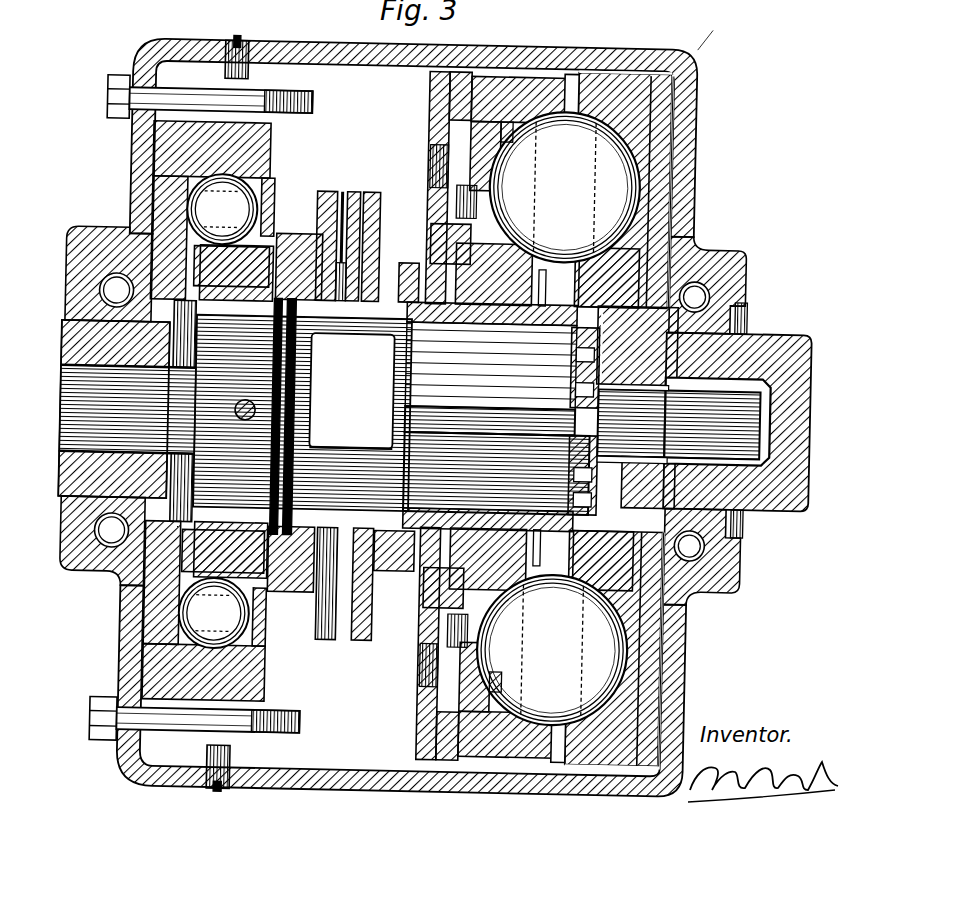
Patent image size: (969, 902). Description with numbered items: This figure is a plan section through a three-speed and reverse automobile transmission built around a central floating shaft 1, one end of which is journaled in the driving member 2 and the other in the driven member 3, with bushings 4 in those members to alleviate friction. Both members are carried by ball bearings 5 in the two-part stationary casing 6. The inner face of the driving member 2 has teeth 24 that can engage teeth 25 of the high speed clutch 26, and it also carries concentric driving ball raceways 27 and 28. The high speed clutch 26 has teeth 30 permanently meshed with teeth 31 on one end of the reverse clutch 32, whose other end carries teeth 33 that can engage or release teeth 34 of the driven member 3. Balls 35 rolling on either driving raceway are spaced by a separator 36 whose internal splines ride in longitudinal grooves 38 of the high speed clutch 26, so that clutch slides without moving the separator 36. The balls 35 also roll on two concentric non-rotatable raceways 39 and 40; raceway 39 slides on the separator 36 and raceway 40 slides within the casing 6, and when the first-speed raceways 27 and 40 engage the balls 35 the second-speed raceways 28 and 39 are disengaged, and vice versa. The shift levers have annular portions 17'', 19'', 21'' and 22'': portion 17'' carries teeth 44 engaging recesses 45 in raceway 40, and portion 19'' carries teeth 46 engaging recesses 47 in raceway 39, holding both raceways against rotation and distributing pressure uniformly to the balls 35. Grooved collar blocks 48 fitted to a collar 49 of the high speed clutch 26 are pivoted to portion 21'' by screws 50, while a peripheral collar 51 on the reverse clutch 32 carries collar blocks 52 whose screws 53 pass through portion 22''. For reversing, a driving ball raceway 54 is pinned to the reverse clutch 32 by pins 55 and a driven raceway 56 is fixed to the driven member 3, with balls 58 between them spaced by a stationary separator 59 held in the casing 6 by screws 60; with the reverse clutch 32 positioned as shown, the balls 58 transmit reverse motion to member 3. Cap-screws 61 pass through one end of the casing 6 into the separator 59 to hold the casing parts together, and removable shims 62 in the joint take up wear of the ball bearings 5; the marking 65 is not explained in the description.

The central floating shaft 1 is at (768, 518).
The driving member 2 is at (780, 340).
The driven member 3 is at (124, 676).
The bushing 4 is at (790, 386).
The ball bearing 5 is at (110, 240).
The casing 6 is at (150, 62).
The annular portion of first-speed shift lever 17'' is at (407, 414).
The annular portion of second-speed shift lever 19'' is at (478, 483).
The annular portion of high speed shift lever 21'' is at (513, 492).
The annular portion of reverse shift lever 22'' is at (451, 502).
The teeth 24 is at (680, 470).
The teeth 25 is at (678, 424).
The high speed clutch 26 is at (496, 473).
The driving ball raceway 27 is at (697, 558).
The driving ball raceway 28 is at (680, 92).
The teeth 30 is at (351, 391).
The teeth 31 is at (350, 437).
The reverse clutch 32 is at (268, 436).
The teeth 33 is at (190, 340).
The teeth 34 is at (192, 366).
The balls 35 is at (668, 162).
The separator 36 is at (552, 330).
The longitudinal grooves 38 is at (504, 407).
The non-rotatable raceway 39 is at (540, 254).
The non-rotatable raceway 40 is at (590, 72).
The teeth 44 is at (470, 66).
The recesses 45 is at (445, 118).
The teeth 46 is at (450, 200).
The recesses 47 is at (427, 244).
The grooved collar blocks 48 is at (388, 300).
The collar 49 is at (452, 600).
The screws 50 is at (440, 636).
The peripheral collar 51 is at (295, 236).
The collar blocks 52 is at (300, 300).
The screws 53 is at (340, 194).
The driving ball raceway 54 is at (105, 585).
The pins 55 is at (236, 410).
The driven raceway 56 is at (180, 162).
The balls 58 is at (170, 672).
The stationary separator 59 is at (282, 66).
The screws 60 is at (232, 42).
The cap-screws 61 is at (101, 102).
The shims 62 is at (214, 782).
The casing boss 65 is at (720, 30).